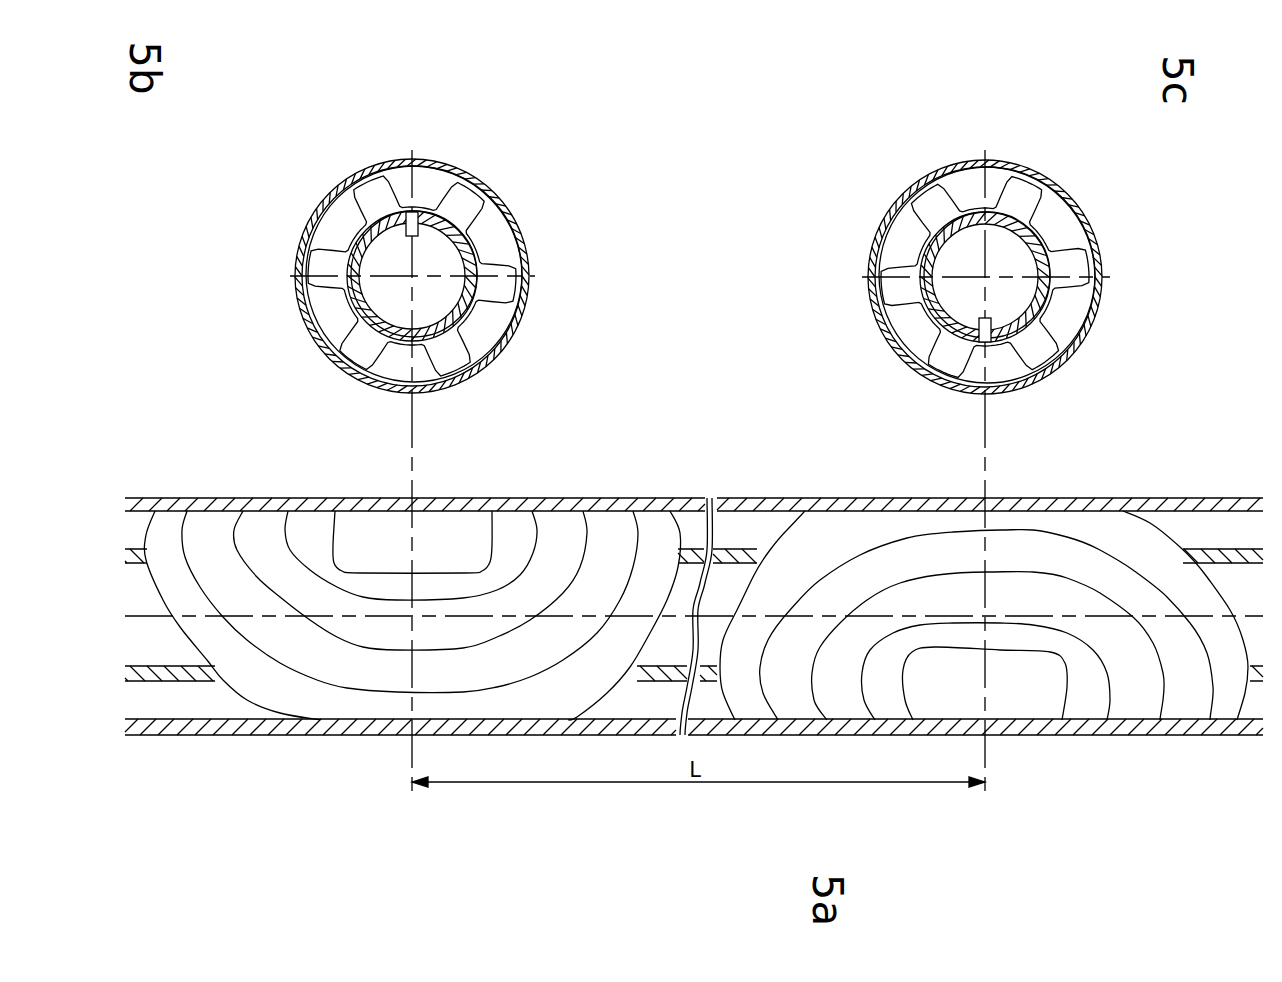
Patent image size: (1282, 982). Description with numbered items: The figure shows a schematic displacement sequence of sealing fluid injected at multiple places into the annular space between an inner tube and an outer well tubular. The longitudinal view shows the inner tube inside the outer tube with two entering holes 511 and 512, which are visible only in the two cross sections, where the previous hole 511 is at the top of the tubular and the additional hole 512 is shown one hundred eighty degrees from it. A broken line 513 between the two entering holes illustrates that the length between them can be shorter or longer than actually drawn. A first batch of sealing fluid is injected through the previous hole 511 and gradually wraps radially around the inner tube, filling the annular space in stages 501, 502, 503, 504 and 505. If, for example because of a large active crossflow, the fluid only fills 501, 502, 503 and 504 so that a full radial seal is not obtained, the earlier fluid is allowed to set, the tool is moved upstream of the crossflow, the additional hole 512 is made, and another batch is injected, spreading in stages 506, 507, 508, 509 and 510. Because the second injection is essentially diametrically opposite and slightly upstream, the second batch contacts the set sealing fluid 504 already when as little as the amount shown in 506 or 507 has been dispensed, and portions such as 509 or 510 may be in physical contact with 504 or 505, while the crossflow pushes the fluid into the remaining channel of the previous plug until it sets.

In FIG. 5A, the first stage of sealing fluid from the previous hole 501 is at (458, 527).
In FIG. 5B, the first stage of sealing fluid from the previous hole 501 is at (450, 205).
In FIG. 5A, the second stage of sealing fluid from the previous hole 502 is at (512, 527).
In FIG. 5B, the second stage of sealing fluid from the previous hole 502 is at (340, 238).
In FIG. 5A, the third stage of sealing fluid from the previous hole 503 is at (563, 527).
In FIG. 5B, the third stage of sealing fluid from the previous hole 503 is at (320, 260).
In FIG. 5A, the fourth stage of sealing fluid from the previous hole 504 is at (613, 525).
In FIG. 5B, the fourth stage of sealing fluid from the previous hole 504 is at (330, 318).
In FIG. 5A, the fifth stage of sealing fluid from the previous hole 505 is at (662, 527).
In FIG. 5B, the fifth stage of sealing fluid from the previous hole 505 is at (380, 365).
In FIG. 5A, the first stage of additional batch of sealing fluid 506 is at (1017, 707).
In FIG. 5C, the first stage of additional batch of sealing fluid 506 is at (960, 362).
In FIG. 5A, the second stage of additional batch of sealing fluid 507 is at (1083, 707).
In FIG. 5C, the second stage of additional batch of sealing fluid 507 is at (900, 322).
In FIG. 5A, the third stage of additional batch of sealing fluid 508 is at (1128, 705).
In FIG. 5C, the third stage of additional batch of sealing fluid 508 is at (893, 262).
In FIG. 5A, the fourth stage of additional batch of sealing fluid 509 is at (1178, 707).
In FIG. 5C, the fourth stage of additional batch of sealing fluid 509 is at (907, 225).
In FIG. 5A, the fifth stage of additional batch of sealing fluid 510 is at (1228, 707).
In FIG. 5C, the fifth stage of additional batch of sealing fluid 510 is at (950, 185).
In FIG. 5B, the previous entering hole 511 is at (406, 208).
In FIG. 5C, the additional entering hole 512 is at (985, 344).
In FIG. 5A, the broken line 513 is at (733, 523).